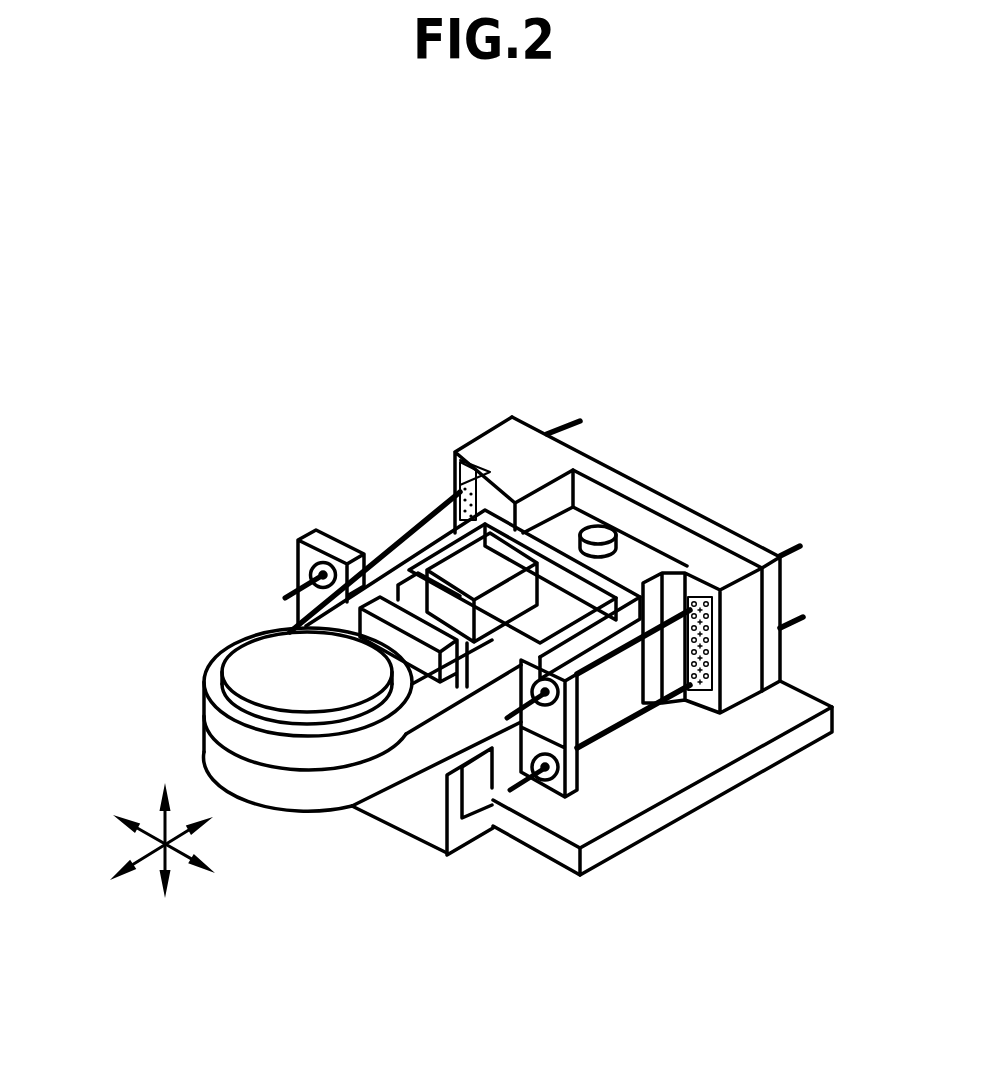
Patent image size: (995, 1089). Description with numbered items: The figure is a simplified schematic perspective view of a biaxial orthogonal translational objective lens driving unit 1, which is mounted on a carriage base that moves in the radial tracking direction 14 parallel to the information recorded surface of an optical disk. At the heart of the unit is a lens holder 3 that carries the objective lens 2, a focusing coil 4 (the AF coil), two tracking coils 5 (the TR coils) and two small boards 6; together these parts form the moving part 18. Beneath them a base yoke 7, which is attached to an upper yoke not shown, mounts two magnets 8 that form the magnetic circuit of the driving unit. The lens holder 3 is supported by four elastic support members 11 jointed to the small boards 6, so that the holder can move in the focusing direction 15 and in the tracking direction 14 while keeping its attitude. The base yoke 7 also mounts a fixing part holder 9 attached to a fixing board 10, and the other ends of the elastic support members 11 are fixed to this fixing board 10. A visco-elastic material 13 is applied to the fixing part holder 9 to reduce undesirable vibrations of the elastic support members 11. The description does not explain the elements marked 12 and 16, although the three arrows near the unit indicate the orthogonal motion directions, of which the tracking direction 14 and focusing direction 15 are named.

The objective lens driving unit 1 is at (486, 1080).
The objective lens 2 is at (238, 672).
The lens holder 3 is at (330, 792).
The focusing coil 4 is at (560, 630).
The tracking coils 5 is at (467, 617).
The small boards 6 is at (305, 558).
The base yoke 7 is at (650, 823).
The magnets 8 is at (420, 583).
The fixing part holder 9 is at (485, 447).
The fixing board 10 is at (520, 423).
The elastic support members 11 is at (578, 420).
The cylindrical stopper 12 is at (603, 538).
The visco-elastic material 13 is at (460, 470).
The tracking direction 14 is at (185, 859).
The focusing direction 15 is at (165, 860).
The direction arrow 16 is at (140, 860).
The moving part 18 is at (490, 733).